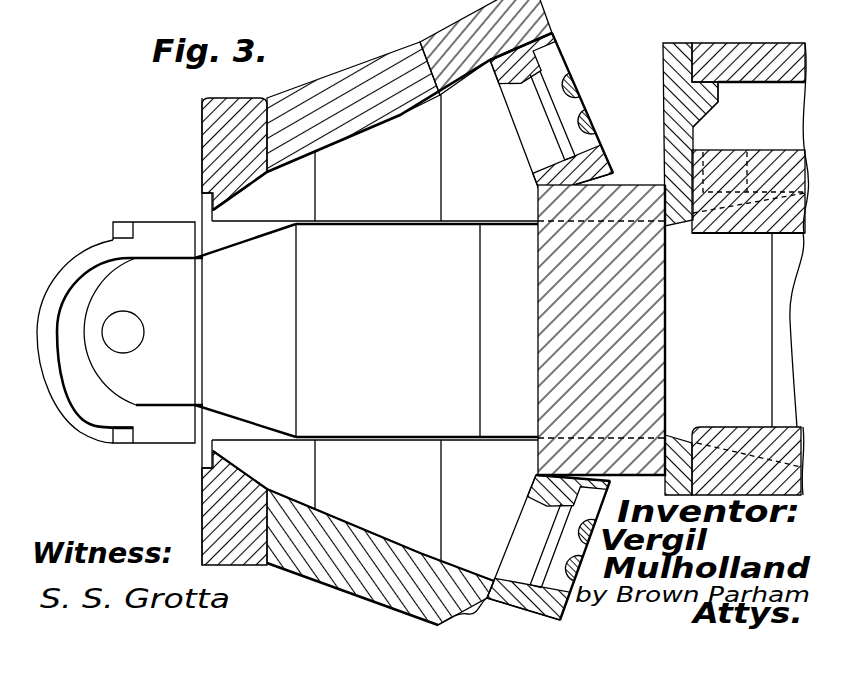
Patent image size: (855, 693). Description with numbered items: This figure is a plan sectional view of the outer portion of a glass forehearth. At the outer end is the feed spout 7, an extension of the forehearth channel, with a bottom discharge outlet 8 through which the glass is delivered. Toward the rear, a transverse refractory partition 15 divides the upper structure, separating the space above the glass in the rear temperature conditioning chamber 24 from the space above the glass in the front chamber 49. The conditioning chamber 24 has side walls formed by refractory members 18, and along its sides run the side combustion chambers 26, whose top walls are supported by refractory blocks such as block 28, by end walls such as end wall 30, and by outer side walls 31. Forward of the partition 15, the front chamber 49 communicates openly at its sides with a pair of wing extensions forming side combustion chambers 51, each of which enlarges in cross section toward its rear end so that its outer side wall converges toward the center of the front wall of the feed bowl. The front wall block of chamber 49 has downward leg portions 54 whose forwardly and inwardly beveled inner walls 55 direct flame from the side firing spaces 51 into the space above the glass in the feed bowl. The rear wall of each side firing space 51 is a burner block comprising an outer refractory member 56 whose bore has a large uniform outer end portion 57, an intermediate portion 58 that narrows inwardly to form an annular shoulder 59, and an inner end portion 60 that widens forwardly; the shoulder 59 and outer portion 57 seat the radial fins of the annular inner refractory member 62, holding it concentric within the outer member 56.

The feed spout 7 is at (162, 427).
The bottom discharge outlet 8 is at (140, 313).
The transverse refractory partition 15 is at (643, 358).
The side wall members 18 is at (755, 233).
The conditioning chamber 24 is at (742, 330).
The side combustion chamber 26 is at (762, 85).
The refractory block 28 is at (706, 103).
The end wall 30 is at (668, 152).
The outer side wall 31 is at (718, 55).
The front chamber 49 is at (366, 330).
The side combustion chamber 51 is at (372, 140).
The leg portion 54 is at (215, 144).
The beveled inner wall 55 is at (238, 193).
The outer refractory member 56 is at (545, 45).
The outer end portion 57 is at (568, 64).
The intermediate portion 58 is at (560, 147).
The annular shoulder 59 is at (538, 76).
The inner end portion 60 is at (537, 177).
The inner refractory member 62 is at (583, 92).